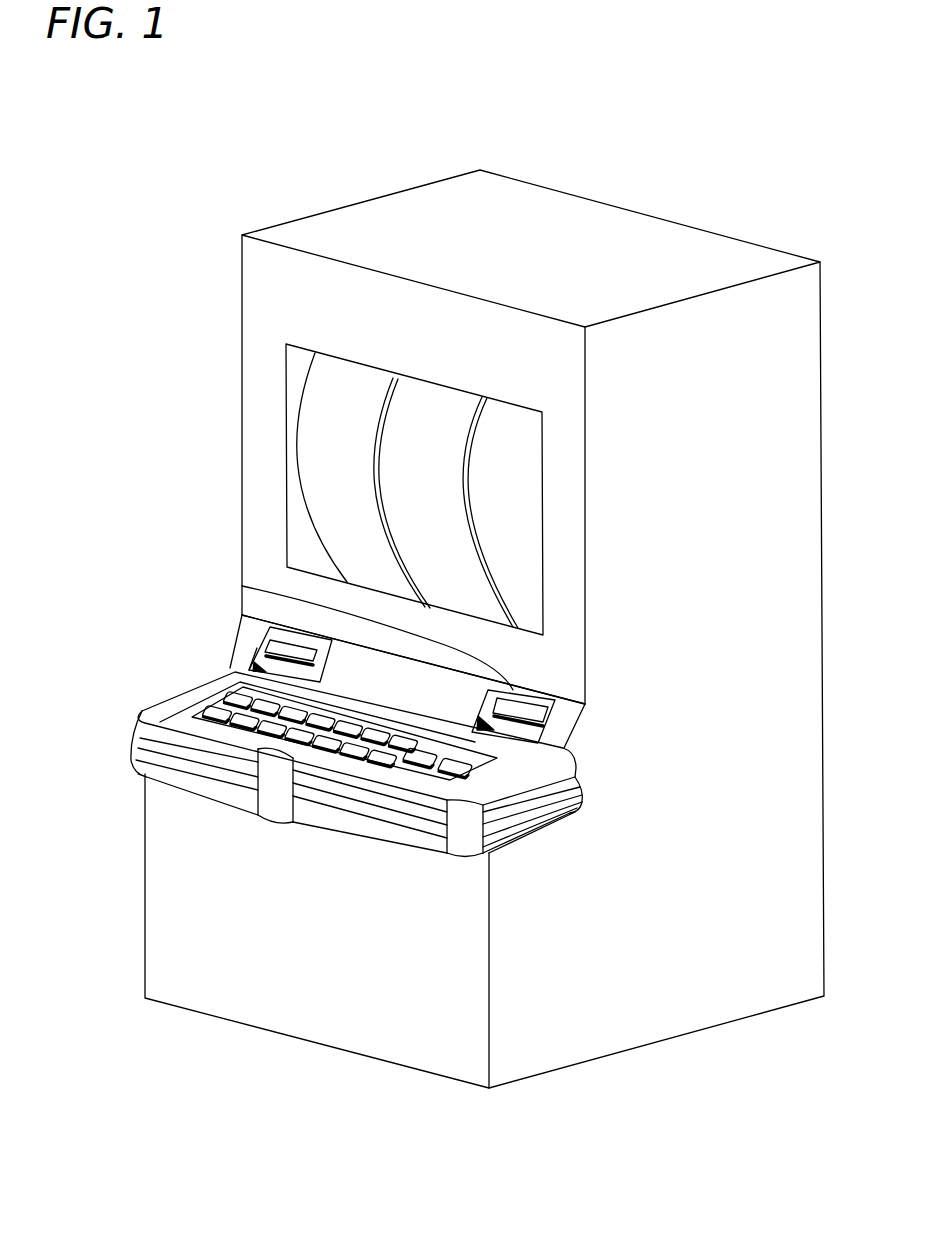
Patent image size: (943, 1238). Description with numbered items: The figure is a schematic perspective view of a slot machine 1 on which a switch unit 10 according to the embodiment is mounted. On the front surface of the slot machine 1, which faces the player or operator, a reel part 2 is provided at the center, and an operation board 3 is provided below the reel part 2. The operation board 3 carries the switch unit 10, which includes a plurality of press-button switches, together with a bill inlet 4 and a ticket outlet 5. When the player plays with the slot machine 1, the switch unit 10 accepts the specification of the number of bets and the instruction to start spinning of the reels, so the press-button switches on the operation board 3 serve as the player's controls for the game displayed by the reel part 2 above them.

The slot machine 1 is at (667, 173).
The reel part 2 is at (318, 473).
The operation board 3 is at (152, 710).
The bill inlet 4 is at (242, 586).
The ticket outlet 5 is at (272, 638).
The switch unit 10 is at (238, 697).